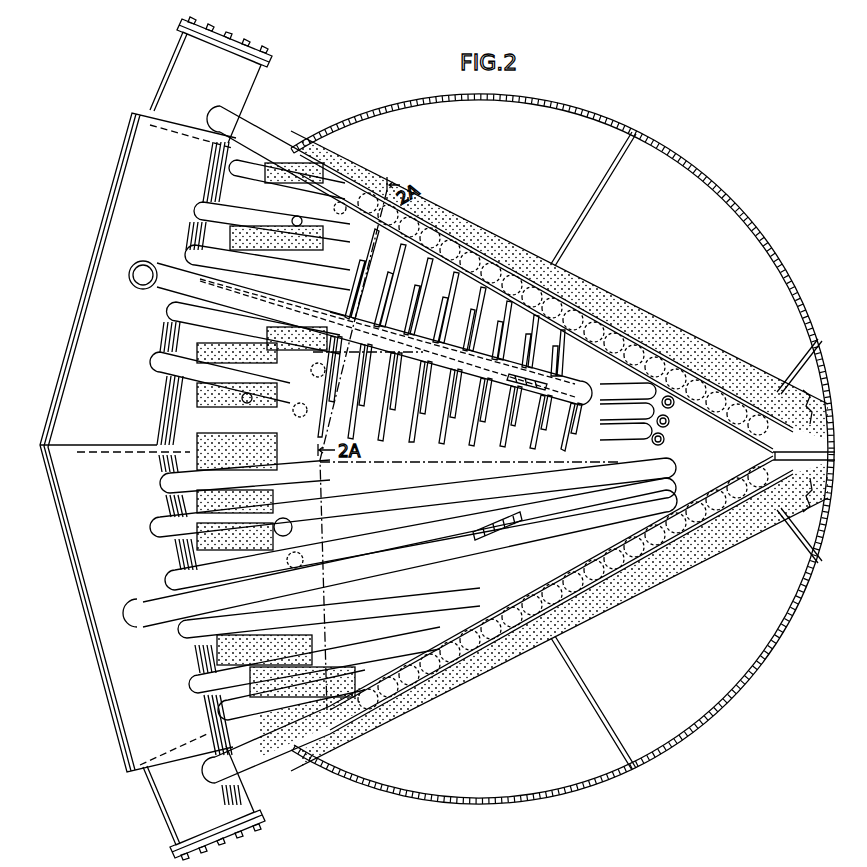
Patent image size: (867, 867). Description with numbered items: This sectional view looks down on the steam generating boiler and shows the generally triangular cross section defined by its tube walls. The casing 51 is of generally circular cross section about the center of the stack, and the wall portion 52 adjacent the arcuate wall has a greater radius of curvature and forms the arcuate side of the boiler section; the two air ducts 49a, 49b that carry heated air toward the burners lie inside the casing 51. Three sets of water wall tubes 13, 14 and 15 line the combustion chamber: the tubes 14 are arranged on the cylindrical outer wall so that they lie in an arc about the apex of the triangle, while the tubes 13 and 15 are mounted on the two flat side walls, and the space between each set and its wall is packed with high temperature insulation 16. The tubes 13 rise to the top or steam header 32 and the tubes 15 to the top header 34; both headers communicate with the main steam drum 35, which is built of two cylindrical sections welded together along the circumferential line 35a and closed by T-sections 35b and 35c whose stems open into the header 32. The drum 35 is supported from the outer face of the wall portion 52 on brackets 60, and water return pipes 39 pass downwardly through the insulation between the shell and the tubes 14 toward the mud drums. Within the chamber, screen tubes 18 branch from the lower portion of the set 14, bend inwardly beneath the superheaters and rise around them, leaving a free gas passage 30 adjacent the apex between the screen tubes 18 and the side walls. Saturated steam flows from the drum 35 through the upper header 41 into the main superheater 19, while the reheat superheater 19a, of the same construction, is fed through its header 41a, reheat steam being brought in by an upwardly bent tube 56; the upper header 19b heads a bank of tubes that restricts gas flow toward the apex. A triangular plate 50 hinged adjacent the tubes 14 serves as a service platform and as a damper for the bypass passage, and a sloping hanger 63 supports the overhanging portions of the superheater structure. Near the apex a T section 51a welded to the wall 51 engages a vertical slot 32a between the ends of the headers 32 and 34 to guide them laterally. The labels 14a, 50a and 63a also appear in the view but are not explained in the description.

The water wall tubes 13 is at (723, 492).
The water wall tubes 14 is at (303, 399).
The tube 14a is at (235, 188).
The water wall tubes 15 is at (610, 357).
The high temperature insulation 16 is at (486, 234).
The screen tubes 18 is at (197, 257).
The superheater tubes 19 is at (466, 460).
The second superheater 19a is at (408, 425).
The upper header 19b is at (560, 438).
The free gas passage 30 is at (730, 450).
The top or steam header 32 is at (353, 707).
The vertical slot 32a is at (806, 414).
The top header 34 is at (277, 141).
The main steam drum 35 is at (63, 530).
The circumferential line 35a is at (70, 445).
The T-section 35b is at (175, 75).
The T-section 35c is at (157, 806).
The water return pipes 39 is at (240, 400).
The upper header 41 is at (175, 600).
The header 41a is at (340, 312).
The air duct 49a is at (730, 678).
The air duct 49b is at (698, 196).
The triangular plate 50 is at (340, 524).
The tube end 50a is at (285, 368).
The casing 51 is at (577, 118).
The T section 51a is at (812, 492).
The wall portion 52 is at (185, 458).
The upwardly bent tube 56 is at (140, 260).
The brackets 60 is at (235, 170).
The sloping hanger 63 is at (500, 517).
The support bar 63a is at (545, 388).